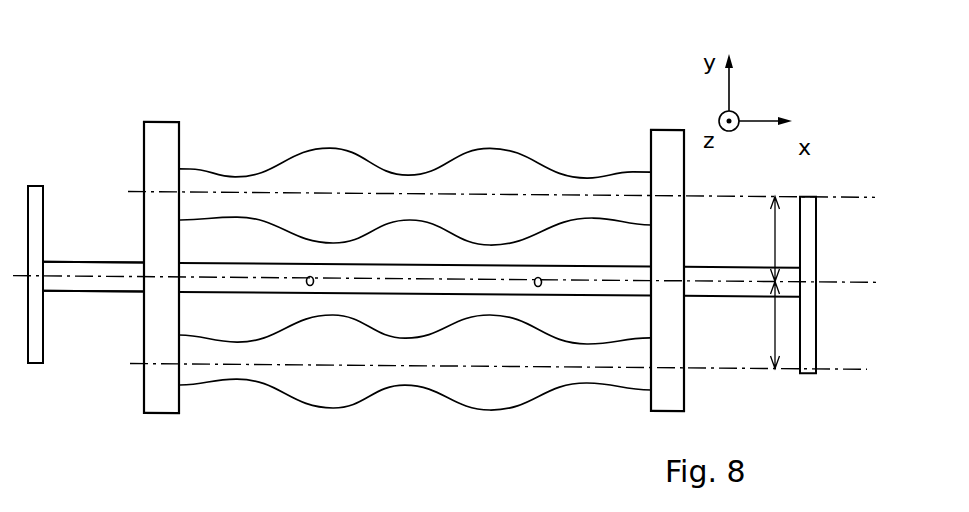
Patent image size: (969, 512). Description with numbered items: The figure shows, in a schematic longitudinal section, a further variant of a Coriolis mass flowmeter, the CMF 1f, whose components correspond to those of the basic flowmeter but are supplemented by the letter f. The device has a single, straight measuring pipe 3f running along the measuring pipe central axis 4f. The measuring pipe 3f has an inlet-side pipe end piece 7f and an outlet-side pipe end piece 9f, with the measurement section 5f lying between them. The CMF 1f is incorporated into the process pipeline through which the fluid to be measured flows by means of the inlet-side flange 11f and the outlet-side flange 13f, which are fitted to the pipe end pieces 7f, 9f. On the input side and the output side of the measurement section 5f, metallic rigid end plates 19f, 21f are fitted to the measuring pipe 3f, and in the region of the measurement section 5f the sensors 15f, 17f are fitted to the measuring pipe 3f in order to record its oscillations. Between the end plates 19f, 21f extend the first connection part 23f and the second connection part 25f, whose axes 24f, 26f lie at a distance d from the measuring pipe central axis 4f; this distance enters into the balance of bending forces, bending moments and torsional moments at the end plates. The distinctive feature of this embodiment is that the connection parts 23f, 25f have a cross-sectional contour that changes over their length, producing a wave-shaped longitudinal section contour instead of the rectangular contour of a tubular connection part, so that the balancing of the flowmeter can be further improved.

The CMF 1f is at (457, 258).
The measuring pipe 3f is at (125, 299).
The measuring pipe central axis 4f is at (457, 295).
The measurement section 5f is at (258, 282).
The inlet-side pipe end piece 7f is at (94, 273).
The outlet-side pipe end piece 9f is at (719, 280).
The inlet-side flange 11f is at (37, 203).
The outlet-side flange 13f is at (812, 358).
The sensor 15f is at (311, 277).
The sensor 17f is at (538, 278).
The end plate 19f is at (164, 138).
The end plate 21f is at (663, 143).
The first connection part 23f is at (282, 177).
The axis of connection part 24f is at (857, 197).
The second connection part 25f is at (230, 370).
The axis of connection part 26f is at (514, 381).